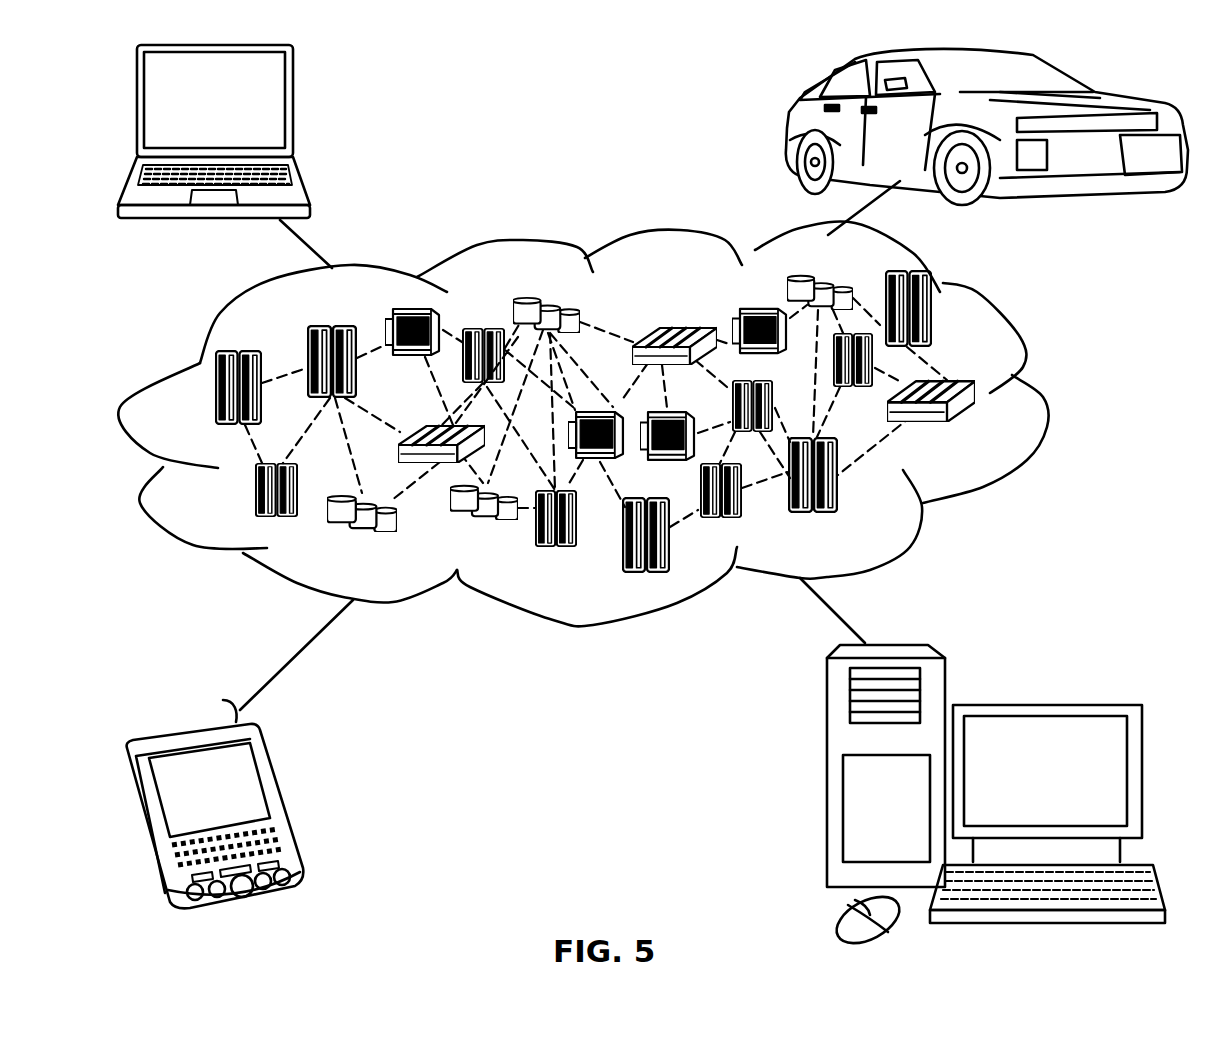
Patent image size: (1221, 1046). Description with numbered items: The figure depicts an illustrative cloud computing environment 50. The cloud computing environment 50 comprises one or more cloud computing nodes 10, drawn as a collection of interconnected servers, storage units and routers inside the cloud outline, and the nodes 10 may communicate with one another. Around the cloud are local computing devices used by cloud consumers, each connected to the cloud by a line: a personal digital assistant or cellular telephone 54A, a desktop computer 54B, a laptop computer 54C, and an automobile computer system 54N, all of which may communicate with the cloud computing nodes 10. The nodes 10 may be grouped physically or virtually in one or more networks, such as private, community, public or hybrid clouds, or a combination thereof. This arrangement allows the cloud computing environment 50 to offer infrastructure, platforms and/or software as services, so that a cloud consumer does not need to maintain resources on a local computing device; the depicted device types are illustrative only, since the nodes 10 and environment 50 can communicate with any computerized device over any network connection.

The cloud computing environment 50 is at (1043, 397).
The cloud computing nodes 10 is at (975, 429).
The personal digital assistant or cellular telephone 54A is at (282, 804).
The desktop computer 54B is at (1045, 704).
The laptop computer 54C is at (294, 112).
The automobile computer system 54N is at (795, 127).